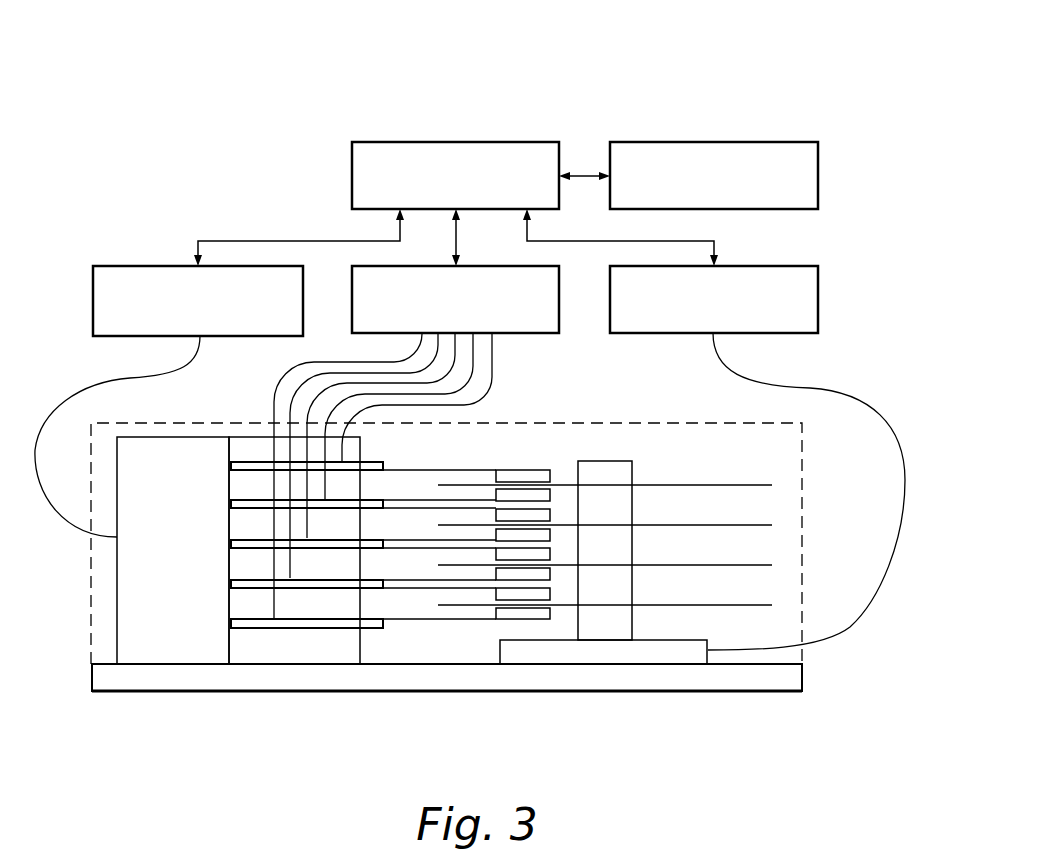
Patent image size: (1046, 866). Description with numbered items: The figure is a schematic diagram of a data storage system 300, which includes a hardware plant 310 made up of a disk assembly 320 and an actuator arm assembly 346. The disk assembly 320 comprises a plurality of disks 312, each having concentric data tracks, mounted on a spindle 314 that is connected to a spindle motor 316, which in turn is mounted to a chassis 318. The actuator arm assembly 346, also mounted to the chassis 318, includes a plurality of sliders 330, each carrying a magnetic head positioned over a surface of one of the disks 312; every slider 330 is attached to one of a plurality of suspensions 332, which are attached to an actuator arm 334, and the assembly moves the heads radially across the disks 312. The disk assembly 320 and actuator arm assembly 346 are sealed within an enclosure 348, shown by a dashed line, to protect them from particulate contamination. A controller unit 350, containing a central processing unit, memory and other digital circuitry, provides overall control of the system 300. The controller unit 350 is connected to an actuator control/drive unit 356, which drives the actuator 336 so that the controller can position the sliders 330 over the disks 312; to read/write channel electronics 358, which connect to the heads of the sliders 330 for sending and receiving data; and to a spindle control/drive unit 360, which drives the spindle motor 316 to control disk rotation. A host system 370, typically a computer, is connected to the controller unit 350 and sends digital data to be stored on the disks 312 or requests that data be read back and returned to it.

The data storage system 300 is at (578, 92).
The hardware plant 310 is at (60, 374).
The disks 312 is at (747, 487).
The spindle 314 is at (633, 470).
The spindle motor 316 is at (637, 658).
The chassis 318 is at (793, 677).
The disk assembly 320 is at (572, 652).
The sliders 330 is at (528, 493).
The suspensions 332 is at (465, 538).
The actuator arm 334 is at (258, 502).
The actuator 336 is at (205, 541).
The actuator arm assembly 346 is at (135, 627).
The enclosure 348 is at (90, 548).
The controller unit 350 is at (352, 170).
The actuator control/drive unit 356 is at (93, 292).
The read/write channel electronics 358 is at (352, 292).
The spindle control/drive unit 360 is at (818, 292).
The host system 370 is at (818, 170).